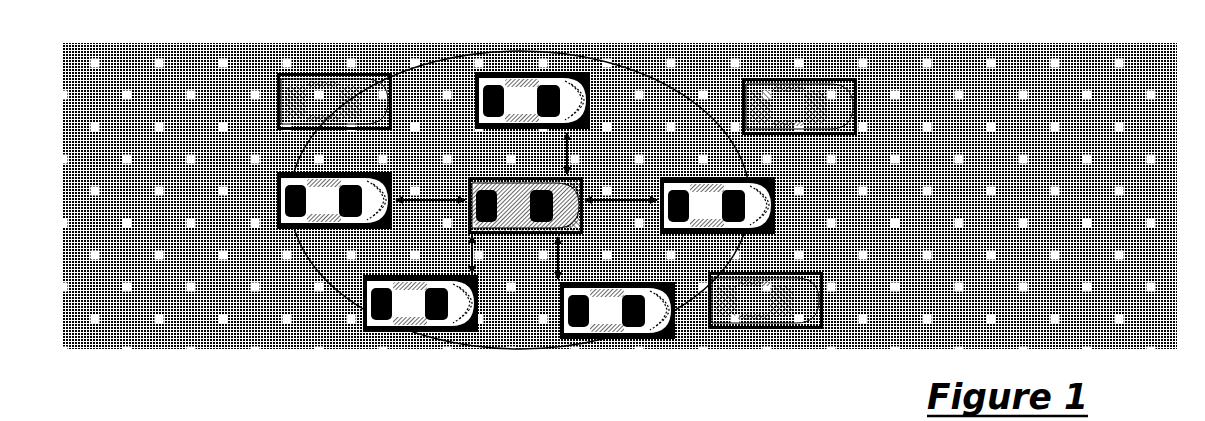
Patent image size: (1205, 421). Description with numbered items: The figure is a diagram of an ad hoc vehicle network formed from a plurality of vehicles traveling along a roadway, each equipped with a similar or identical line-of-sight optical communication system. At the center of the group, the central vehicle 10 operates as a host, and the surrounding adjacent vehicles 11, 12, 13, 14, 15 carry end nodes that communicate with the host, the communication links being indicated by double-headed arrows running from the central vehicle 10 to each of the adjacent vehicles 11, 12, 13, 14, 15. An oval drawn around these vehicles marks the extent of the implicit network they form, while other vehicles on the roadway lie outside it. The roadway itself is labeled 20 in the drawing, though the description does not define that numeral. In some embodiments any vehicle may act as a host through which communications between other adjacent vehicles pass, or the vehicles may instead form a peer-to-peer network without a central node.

The central vehicle 10 is at (497, 177).
The adjacent vehicle 11 is at (530, 72).
The adjacent vehicle 12 is at (683, 177).
The adjacent vehicle 13 is at (636, 282).
The adjacent vehicle 14 is at (400, 275).
The adjacent vehicle 15 is at (358, 172).
The road 20 is at (620, 232).